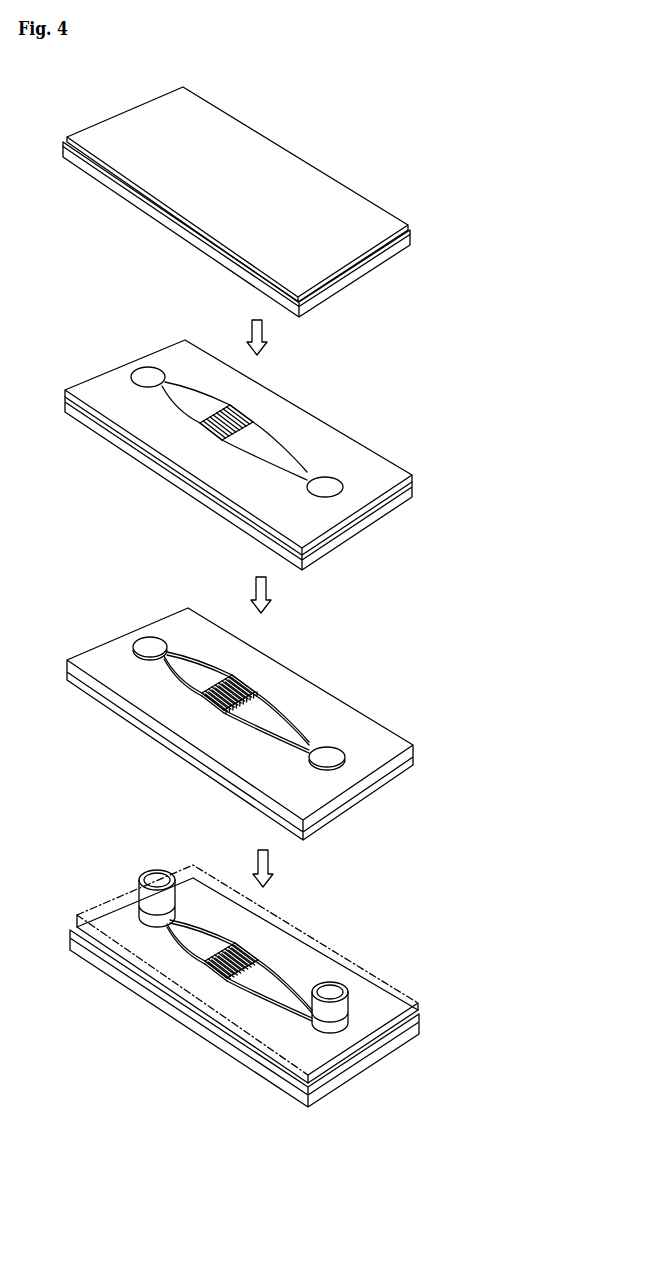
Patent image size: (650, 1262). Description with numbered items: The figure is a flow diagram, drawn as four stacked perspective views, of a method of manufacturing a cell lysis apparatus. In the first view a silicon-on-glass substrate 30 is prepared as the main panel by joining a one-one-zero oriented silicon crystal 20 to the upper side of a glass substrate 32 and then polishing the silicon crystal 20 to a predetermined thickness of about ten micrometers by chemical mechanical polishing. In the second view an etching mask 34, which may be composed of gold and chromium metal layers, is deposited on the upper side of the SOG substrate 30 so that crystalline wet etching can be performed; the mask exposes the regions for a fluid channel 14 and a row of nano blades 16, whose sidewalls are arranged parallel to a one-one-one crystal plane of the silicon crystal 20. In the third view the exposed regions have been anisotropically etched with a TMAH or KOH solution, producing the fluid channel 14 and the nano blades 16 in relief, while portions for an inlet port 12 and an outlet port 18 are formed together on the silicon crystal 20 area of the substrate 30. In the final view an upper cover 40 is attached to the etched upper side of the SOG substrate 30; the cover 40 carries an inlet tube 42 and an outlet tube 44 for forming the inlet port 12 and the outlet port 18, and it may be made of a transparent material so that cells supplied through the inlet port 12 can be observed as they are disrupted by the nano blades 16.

The inlet port 12 is at (150, 650).
The fluid channel 14 is at (200, 678).
The nano blades 16 is at (247, 697).
The outlet port 18 is at (328, 757).
The [110] silicon crystal 20 is at (337, 191).
The silicon-on-glass (SOG) substrate 30 is at (295, 127).
The glass substrate 32 is at (413, 236).
The etching mask 34 is at (347, 445).
The upper cover 40 is at (388, 985).
The inlet tube 42 is at (147, 880).
The outlet tube 44 is at (328, 987).